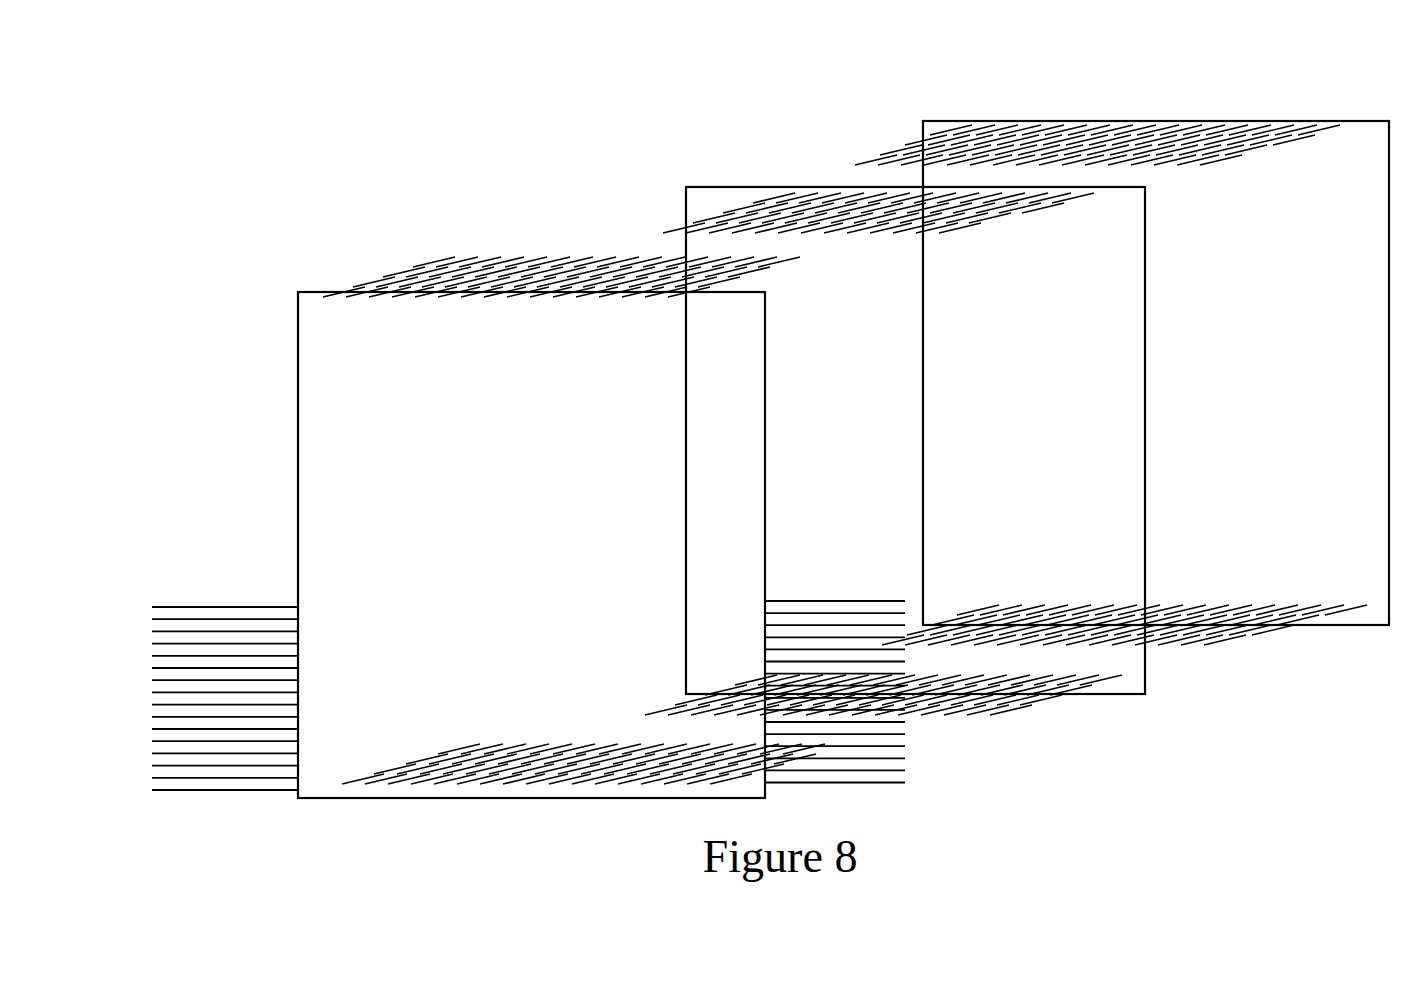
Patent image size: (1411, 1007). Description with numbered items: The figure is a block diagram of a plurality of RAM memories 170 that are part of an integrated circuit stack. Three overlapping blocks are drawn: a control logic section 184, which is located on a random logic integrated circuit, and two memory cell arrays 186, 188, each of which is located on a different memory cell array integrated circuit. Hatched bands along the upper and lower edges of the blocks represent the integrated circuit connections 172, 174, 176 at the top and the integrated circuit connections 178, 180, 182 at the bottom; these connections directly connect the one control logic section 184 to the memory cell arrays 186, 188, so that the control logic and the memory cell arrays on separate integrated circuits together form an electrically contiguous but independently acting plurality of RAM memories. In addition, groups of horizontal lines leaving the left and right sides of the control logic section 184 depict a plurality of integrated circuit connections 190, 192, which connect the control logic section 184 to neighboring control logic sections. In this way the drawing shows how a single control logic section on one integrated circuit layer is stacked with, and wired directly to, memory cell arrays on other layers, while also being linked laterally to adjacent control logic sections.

The plurality of RAM memories 170 is at (1268, 45).
The integrated circuit connection 172 is at (533, 261).
The integrated circuit connection 174 is at (760, 208).
The integrated circuit connection 176 is at (1095, 143).
The integrated circuit connection 178 is at (567, 765).
The integrated circuit connection 180 is at (1040, 694).
The integrated circuit connection 182 is at (1252, 627).
The control logic section 184 is at (298, 372).
The memory cell array 186 is at (684, 229).
The memory cell array 188 is at (923, 140).
The integrated circuit connection 190 is at (232, 607).
The integrated circuit connection 192 is at (905, 746).